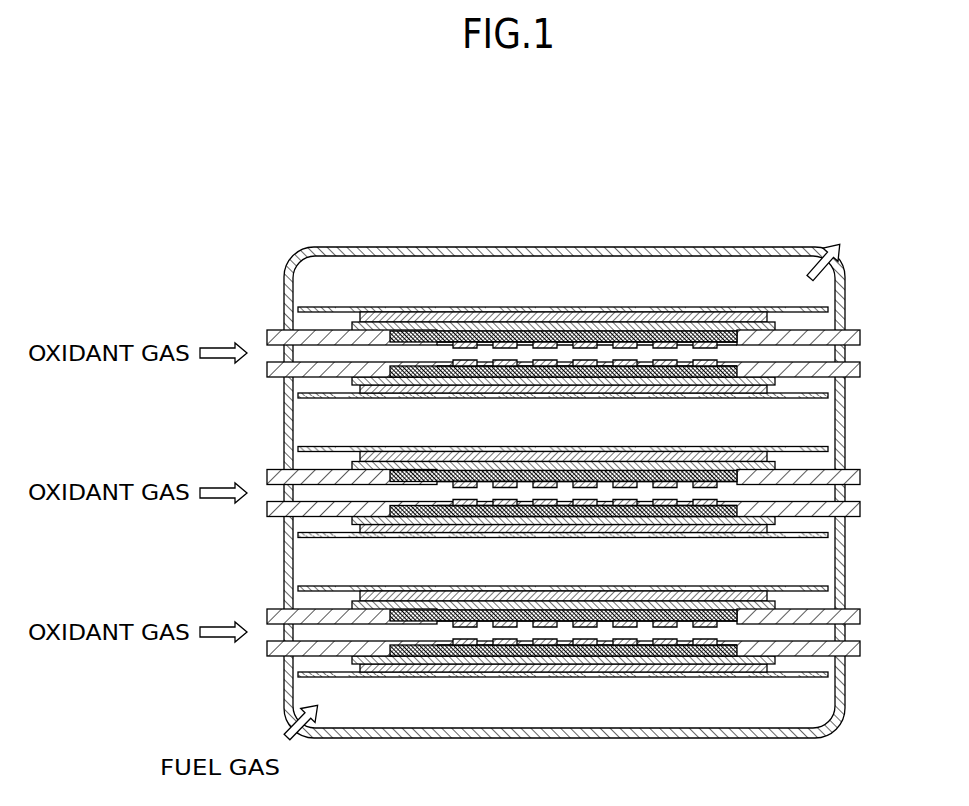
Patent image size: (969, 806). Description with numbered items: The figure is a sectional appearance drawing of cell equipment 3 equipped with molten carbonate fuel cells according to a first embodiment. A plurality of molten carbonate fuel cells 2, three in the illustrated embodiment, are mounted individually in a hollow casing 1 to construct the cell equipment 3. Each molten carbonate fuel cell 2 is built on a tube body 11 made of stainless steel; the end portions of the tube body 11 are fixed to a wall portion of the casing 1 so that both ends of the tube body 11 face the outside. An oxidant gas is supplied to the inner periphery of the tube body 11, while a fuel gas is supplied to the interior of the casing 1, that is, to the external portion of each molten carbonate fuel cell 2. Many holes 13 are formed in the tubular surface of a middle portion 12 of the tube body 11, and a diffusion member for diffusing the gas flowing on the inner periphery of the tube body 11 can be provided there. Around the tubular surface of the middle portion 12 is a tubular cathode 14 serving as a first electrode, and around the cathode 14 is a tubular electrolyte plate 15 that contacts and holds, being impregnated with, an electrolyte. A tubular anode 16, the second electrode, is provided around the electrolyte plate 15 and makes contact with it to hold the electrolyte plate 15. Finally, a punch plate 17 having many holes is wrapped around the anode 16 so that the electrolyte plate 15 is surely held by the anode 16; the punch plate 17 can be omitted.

The casing 1 is at (540, 247).
The molten carbonate fuel cell 2 is at (609, 300).
The cell equipment 3 is at (747, 226).
The tube body 11 is at (313, 330).
The middle portion 12 is at (548, 345).
The holes 13 is at (523, 342).
The cathode 14 is at (640, 337).
The electrolyte plate 15 is at (683, 327).
The anode 16 is at (662, 308).
The punch plate 17 is at (431, 307).